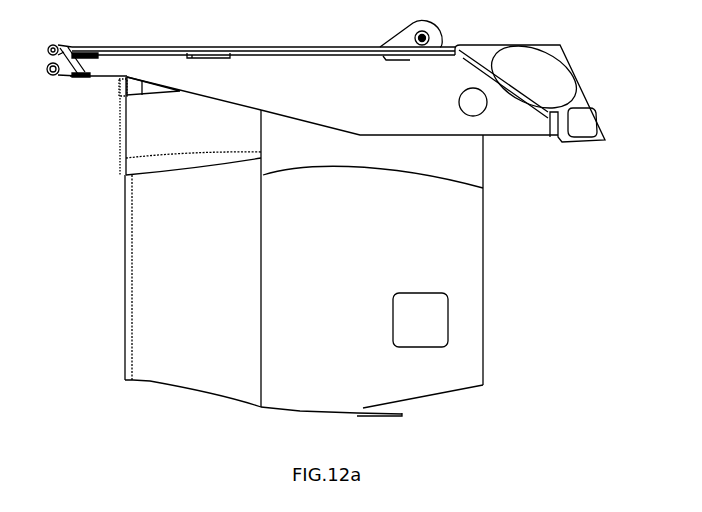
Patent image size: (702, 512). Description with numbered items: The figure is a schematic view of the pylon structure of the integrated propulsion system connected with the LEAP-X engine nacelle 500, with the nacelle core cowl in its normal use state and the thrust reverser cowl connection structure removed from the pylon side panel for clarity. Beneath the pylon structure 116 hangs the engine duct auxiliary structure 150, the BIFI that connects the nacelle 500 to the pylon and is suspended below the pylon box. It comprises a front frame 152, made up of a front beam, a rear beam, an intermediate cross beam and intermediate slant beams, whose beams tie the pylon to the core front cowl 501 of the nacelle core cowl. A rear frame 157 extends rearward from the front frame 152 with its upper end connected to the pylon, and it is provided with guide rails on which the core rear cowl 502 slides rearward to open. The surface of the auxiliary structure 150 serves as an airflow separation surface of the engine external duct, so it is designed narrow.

The arm / beam 116 is at (372, 90).
The engine duct auxiliary structure 150 is at (268, 135).
The front frame 152 is at (190, 126).
The rear frame 157 is at (409, 149).
The nacelle 500 is at (266, 282).
The core front cowl 501 is at (167, 277).
The core rear cowl 502 is at (393, 320).